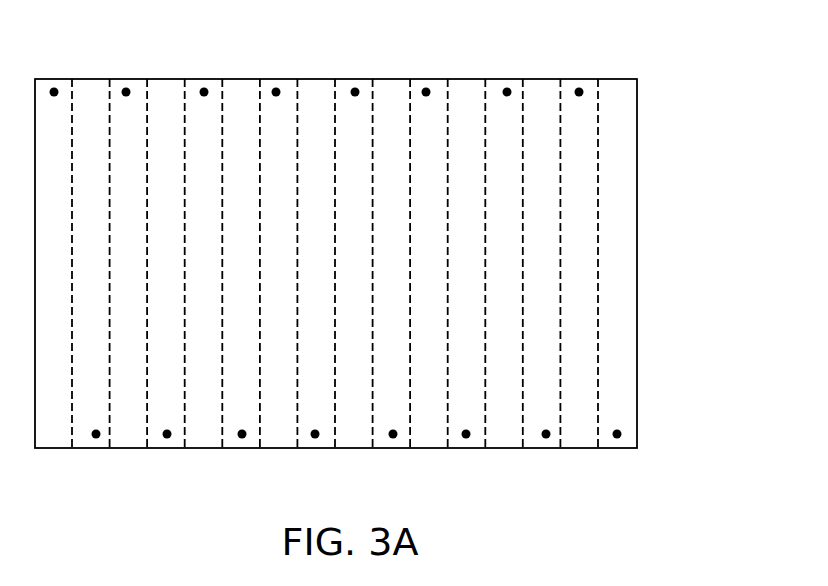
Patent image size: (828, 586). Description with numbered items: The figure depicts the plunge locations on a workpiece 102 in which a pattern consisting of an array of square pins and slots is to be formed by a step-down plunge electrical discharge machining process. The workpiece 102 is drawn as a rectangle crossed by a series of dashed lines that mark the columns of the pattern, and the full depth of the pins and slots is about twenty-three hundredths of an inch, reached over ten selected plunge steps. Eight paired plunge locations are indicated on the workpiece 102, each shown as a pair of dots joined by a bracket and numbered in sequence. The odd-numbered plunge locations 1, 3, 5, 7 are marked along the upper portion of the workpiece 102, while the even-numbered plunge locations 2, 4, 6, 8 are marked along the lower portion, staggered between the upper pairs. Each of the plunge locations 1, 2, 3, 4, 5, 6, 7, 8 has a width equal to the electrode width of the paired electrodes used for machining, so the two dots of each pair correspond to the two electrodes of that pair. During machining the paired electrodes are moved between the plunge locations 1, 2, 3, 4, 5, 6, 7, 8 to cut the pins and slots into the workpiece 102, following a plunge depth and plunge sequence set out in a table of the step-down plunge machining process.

The workpiece 102 is at (637, 187).
The plunge location 1 is at (90, 59).
The plunge location 2 is at (132, 468).
The plunge location 3 is at (240, 59).
The plunge location 4 is at (279, 468).
The plunge location 5 is at (391, 59).
The plunge location 6 is at (430, 468).
The plunge location 7 is at (543, 59).
The plunge location 8 is at (582, 468).